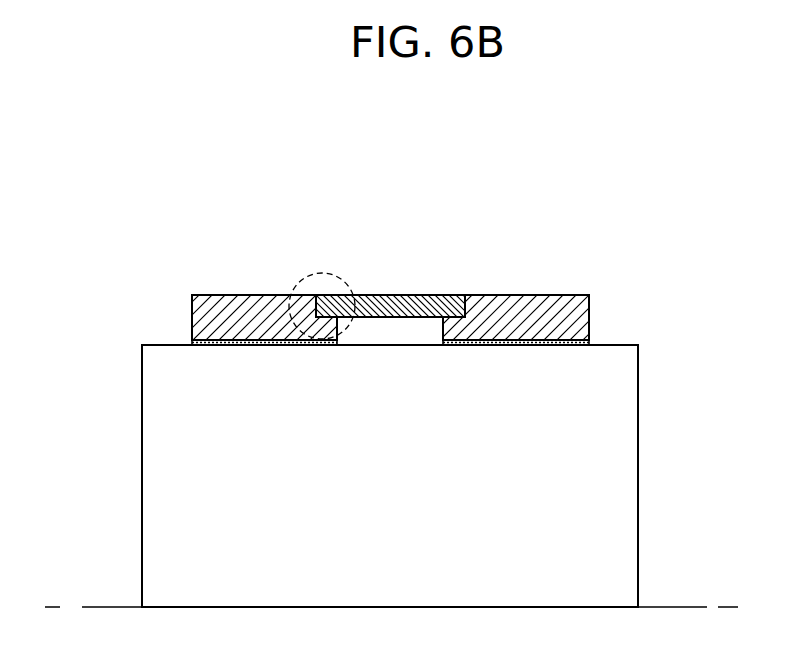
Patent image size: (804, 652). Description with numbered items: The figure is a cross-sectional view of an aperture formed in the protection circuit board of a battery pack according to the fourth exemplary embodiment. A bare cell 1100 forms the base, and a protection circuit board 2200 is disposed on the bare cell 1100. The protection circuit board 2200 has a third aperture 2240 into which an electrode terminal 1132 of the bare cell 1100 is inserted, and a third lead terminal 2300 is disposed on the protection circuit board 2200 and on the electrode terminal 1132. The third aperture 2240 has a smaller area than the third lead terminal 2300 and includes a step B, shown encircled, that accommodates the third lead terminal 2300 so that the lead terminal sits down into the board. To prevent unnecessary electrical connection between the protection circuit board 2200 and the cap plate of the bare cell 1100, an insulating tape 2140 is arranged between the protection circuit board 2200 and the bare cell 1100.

The bare cell 1100 is at (643, 475).
The electrode terminal 1132 is at (397, 336).
The insulating tape 2140 is at (597, 342).
The protection circuit board 2200 is at (603, 302).
The third aperture 2240 is at (469, 300).
The third lead terminal 2300 is at (394, 294).
The step B is at (298, 283).